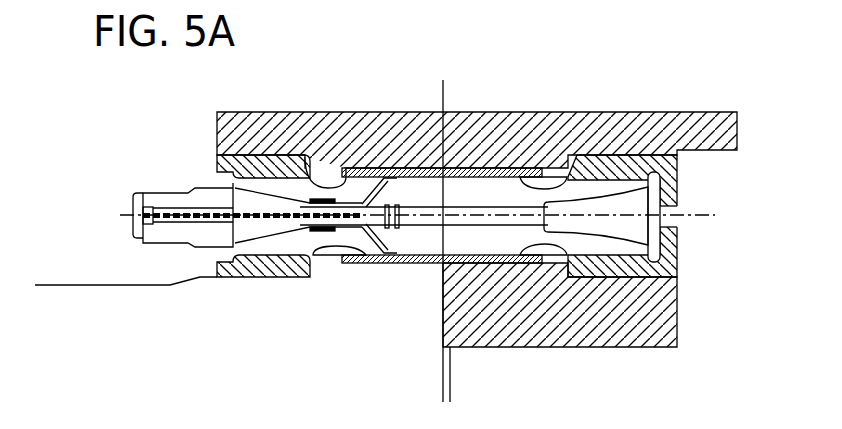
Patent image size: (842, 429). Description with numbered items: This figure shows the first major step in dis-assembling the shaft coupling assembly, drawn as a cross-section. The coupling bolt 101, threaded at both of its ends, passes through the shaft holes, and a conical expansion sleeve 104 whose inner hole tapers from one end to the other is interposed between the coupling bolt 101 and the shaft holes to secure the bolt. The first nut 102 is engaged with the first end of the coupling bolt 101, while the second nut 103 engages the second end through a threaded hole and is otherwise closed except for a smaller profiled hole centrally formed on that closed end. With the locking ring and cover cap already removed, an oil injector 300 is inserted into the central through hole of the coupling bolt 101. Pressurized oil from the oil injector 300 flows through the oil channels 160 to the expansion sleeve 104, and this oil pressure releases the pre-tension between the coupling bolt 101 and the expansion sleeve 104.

The coupling bolt 101 is at (492, 188).
The first nut 102 is at (263, 158).
The second nut 103 is at (612, 172).
The expansion sleeve 104 is at (357, 168).
The oil channels 160 is at (372, 260).
The oil injector 300 is at (152, 202).